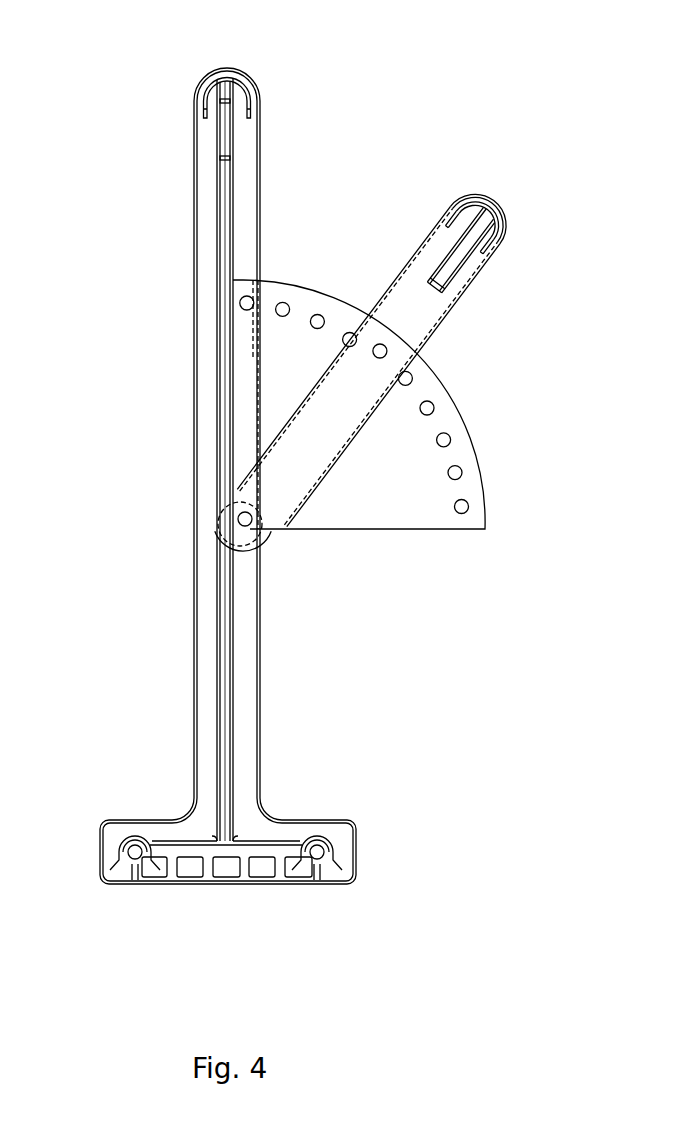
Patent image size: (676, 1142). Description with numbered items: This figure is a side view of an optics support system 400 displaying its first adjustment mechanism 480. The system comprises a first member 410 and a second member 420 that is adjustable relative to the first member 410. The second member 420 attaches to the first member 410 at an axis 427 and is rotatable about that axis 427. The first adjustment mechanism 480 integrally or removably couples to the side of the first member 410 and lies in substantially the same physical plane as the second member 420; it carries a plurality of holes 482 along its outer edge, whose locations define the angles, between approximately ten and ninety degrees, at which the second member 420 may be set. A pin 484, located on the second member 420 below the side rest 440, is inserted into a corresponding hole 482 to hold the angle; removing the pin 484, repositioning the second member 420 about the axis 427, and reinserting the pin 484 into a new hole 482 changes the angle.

The optics support system 400 is at (100, 35).
The first member 410 is at (197, 476).
The second member 420 is at (408, 346).
The axis 427 is at (274, 543).
The side rest 440 is at (505, 212).
The first adjustment mechanism 480 is at (384, 408).
The plurality of holes 482 is at (388, 405).
The pin 484 is at (354, 295).